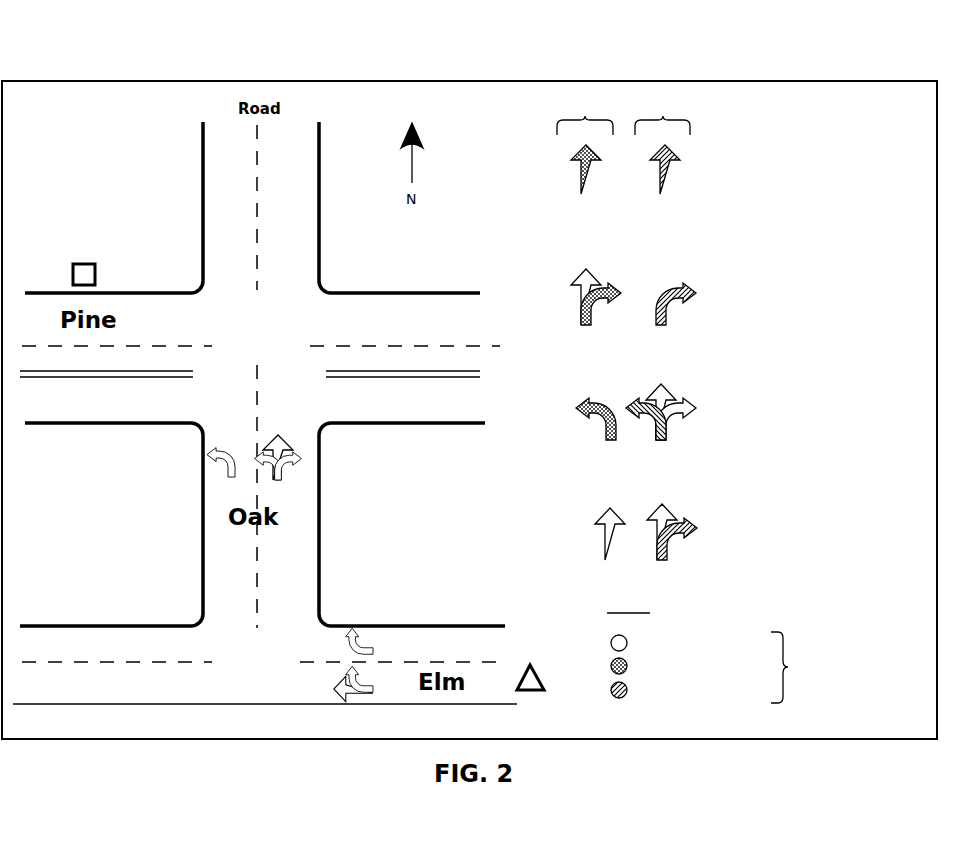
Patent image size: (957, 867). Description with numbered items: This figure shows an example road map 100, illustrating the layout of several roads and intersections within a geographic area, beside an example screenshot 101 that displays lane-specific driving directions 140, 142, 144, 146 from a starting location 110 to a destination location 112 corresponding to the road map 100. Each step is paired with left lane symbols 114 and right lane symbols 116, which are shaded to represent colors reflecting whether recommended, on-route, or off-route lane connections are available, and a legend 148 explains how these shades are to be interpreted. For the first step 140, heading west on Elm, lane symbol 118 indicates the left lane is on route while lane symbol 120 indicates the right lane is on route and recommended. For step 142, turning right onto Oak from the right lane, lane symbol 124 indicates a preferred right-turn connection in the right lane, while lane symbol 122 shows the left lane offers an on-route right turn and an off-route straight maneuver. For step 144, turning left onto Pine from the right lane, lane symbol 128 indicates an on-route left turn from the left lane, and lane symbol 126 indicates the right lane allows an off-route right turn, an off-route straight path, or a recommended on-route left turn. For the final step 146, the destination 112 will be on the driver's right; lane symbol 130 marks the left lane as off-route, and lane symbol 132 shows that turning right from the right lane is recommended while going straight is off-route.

The road map 100 is at (112, 52).
The screenshot 101 is at (738, 72).
The starting location 110 is at (528, 631).
The destination location 112 is at (82, 216).
The left lane symbols 114 is at (585, 115).
The right lane symbols 116 is at (662, 115).
The lane symbol 118 is at (584, 193).
The lane symbol 120 is at (662, 193).
The lane symbol 122 is at (584, 325).
The lane symbol 124 is at (657, 325).
The lane symbol 126 is at (660, 440).
The lane symbol 128 is at (606, 440).
The lane symbol 130 is at (600, 559).
The lane symbol 132 is at (652, 559).
The step 140 is at (840, 150).
The step 142 is at (840, 258).
The step 144 is at (840, 375).
The step 146 is at (840, 497).
The legend 148 is at (718, 647).